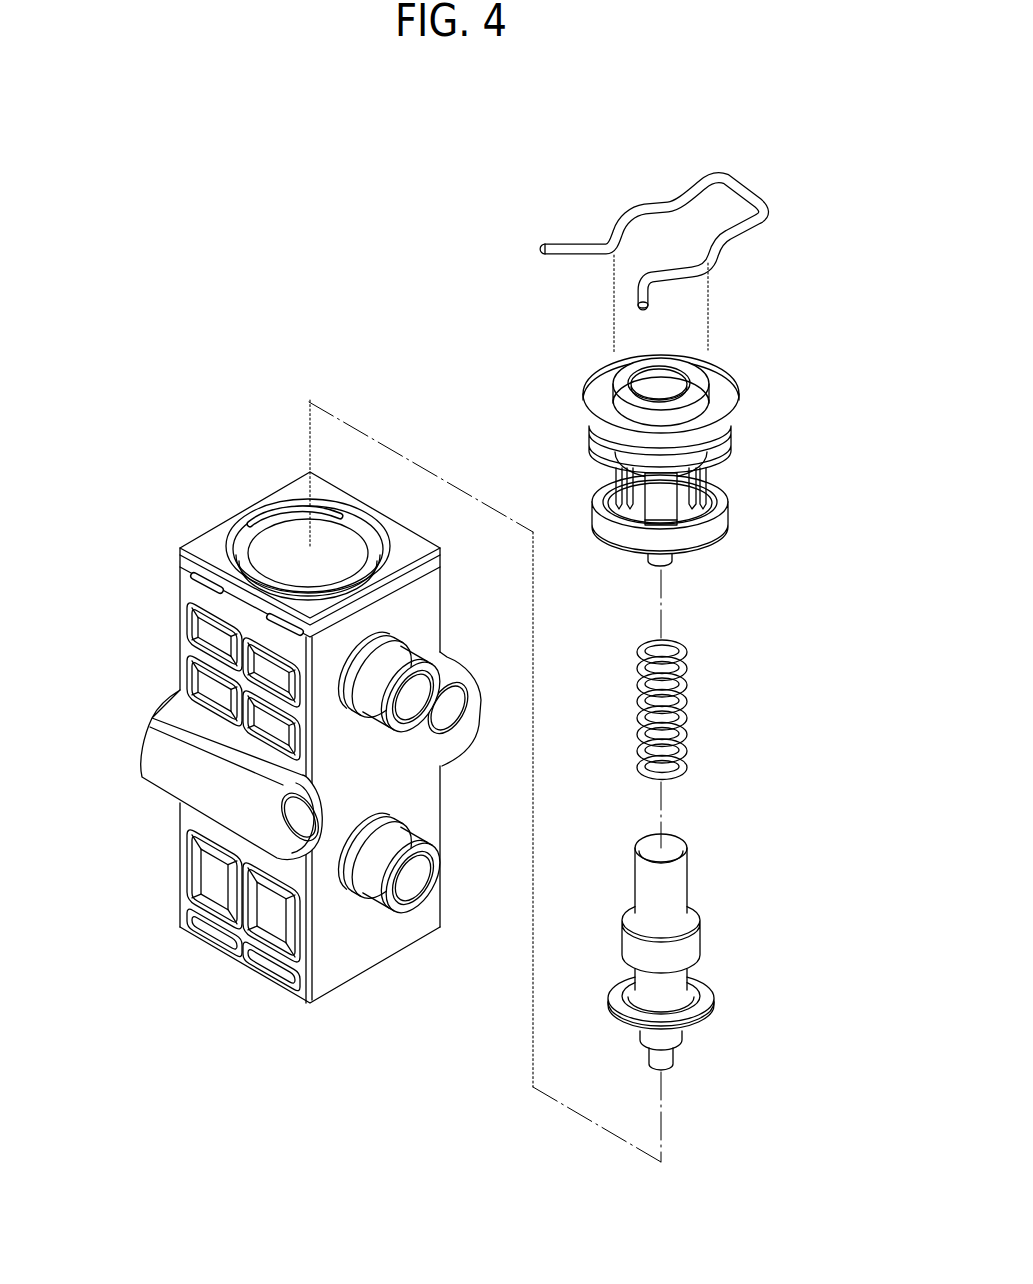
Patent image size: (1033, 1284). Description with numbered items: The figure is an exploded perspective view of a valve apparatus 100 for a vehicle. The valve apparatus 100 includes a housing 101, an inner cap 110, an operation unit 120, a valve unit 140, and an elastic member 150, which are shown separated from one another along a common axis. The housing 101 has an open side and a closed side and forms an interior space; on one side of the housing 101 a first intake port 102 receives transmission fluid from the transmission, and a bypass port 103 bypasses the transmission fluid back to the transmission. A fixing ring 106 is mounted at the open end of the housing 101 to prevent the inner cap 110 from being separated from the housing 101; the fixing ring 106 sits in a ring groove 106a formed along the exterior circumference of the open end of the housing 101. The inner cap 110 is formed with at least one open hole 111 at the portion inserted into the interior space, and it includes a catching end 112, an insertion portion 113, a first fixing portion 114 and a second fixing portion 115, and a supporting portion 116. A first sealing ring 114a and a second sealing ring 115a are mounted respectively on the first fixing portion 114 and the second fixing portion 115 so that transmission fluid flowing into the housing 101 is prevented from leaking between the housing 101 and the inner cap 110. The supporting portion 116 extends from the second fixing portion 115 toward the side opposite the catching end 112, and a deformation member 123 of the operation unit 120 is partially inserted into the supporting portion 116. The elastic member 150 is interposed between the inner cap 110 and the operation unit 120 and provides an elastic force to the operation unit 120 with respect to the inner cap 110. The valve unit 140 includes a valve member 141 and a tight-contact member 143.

The valve apparatus 100 is at (437, 118).
The housing 101 is at (122, 735).
The first intake port 102 is at (372, 880).
The bypass port 103 is at (407, 643).
The fixing ring 106 is at (727, 186).
The ring groove 106a is at (190, 582).
The inner cap 110 is at (760, 398).
The open hole 111 is at (712, 492).
The catching end 112 is at (719, 386).
The insertion portion 113 is at (658, 493).
The first fixing portion 114 is at (705, 477).
The first sealing ring 114a is at (718, 452).
The second fixing portion 115 is at (695, 560).
The second sealing ring 115a is at (690, 521).
The supporting portion 116 is at (664, 566).
The operation unit 120 is at (720, 895).
The deformation member 123 is at (679, 871).
The valve unit 140 is at (800, 968).
The valve member 141 is at (698, 984).
The tight-contact member 143 is at (703, 1024).
The elastic member 150 is at (683, 709).